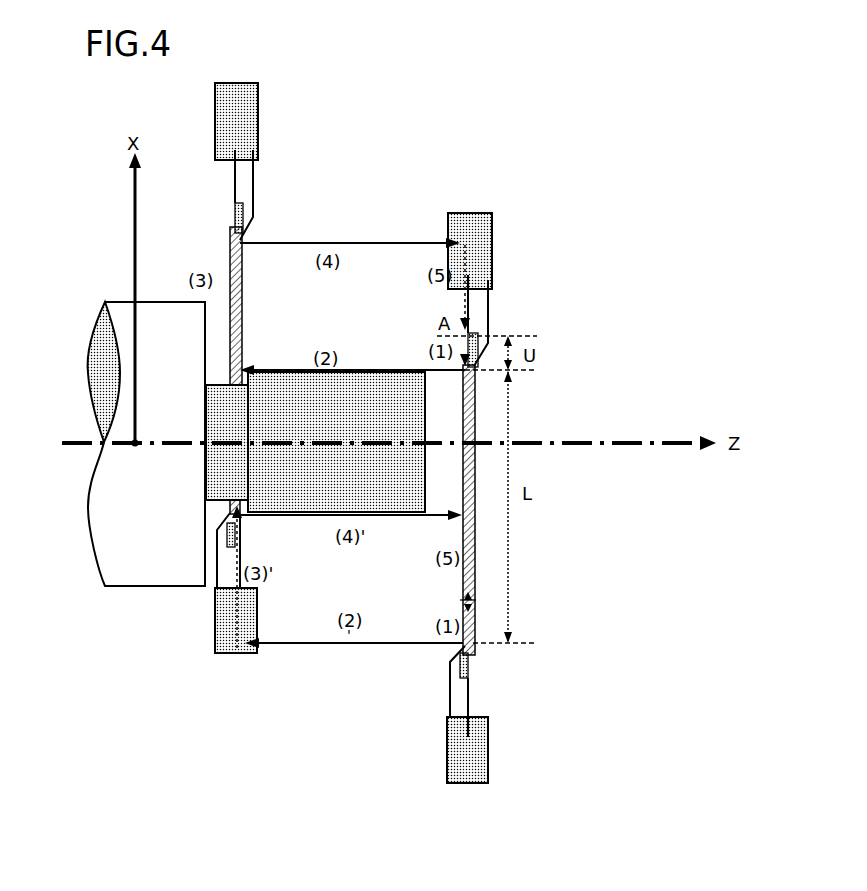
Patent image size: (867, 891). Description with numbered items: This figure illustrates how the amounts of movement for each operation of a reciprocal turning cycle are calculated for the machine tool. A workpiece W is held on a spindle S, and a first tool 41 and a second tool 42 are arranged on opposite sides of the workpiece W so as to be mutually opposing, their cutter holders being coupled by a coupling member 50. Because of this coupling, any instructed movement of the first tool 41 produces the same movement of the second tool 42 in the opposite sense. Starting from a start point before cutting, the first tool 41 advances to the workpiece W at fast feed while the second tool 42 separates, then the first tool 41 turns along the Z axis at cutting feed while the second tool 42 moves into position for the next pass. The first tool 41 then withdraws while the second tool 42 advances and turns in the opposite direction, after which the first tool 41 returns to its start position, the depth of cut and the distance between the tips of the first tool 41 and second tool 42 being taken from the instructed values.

The first tool 41 is at (258, 102).
The second tool 42 is at (257, 623).
The coupling member 50 is at (475, 510).
The workpiece W is at (410, 415).
The spindle S is at (127, 530).